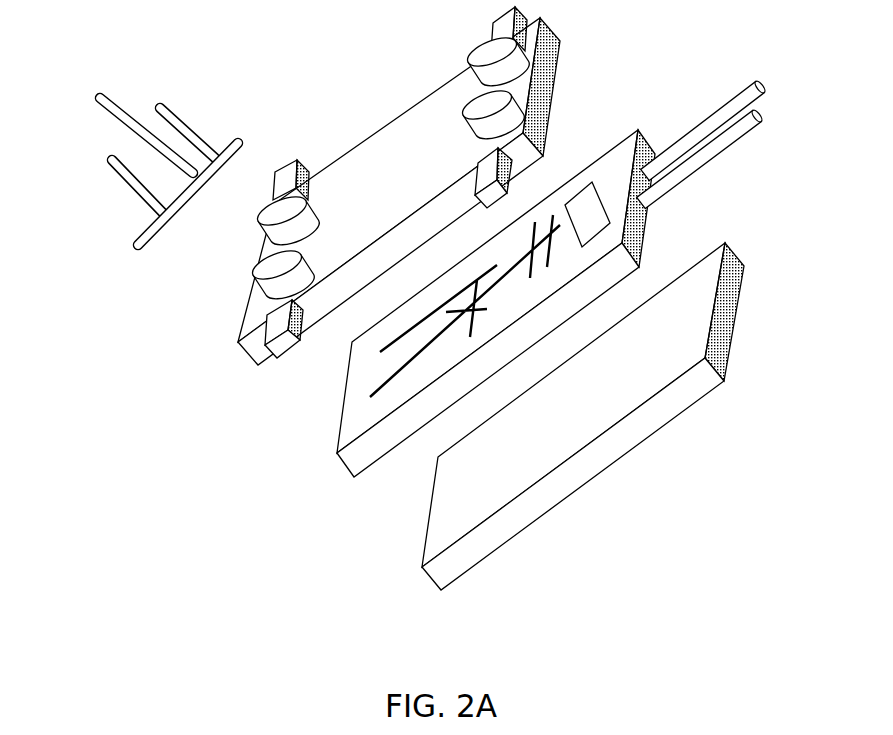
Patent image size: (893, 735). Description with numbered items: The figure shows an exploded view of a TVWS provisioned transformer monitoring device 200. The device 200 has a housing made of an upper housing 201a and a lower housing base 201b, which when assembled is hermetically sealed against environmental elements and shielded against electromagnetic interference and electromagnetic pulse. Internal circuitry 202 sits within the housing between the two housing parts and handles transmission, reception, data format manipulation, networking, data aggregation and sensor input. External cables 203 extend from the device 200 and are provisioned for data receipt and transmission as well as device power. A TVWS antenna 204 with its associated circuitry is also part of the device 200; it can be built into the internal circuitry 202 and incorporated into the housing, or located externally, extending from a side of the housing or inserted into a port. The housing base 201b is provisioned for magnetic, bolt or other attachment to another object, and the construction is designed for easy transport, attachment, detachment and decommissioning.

The TVWS provisioned transformer monitoring device 200 is at (178, 477).
The upper housing 201a is at (243, 315).
The lower housing base 201b is at (415, 560).
The internal circuitry 202 is at (332, 455).
The external cables 203 is at (729, 141).
The TVWS antenna 204 is at (169, 152).